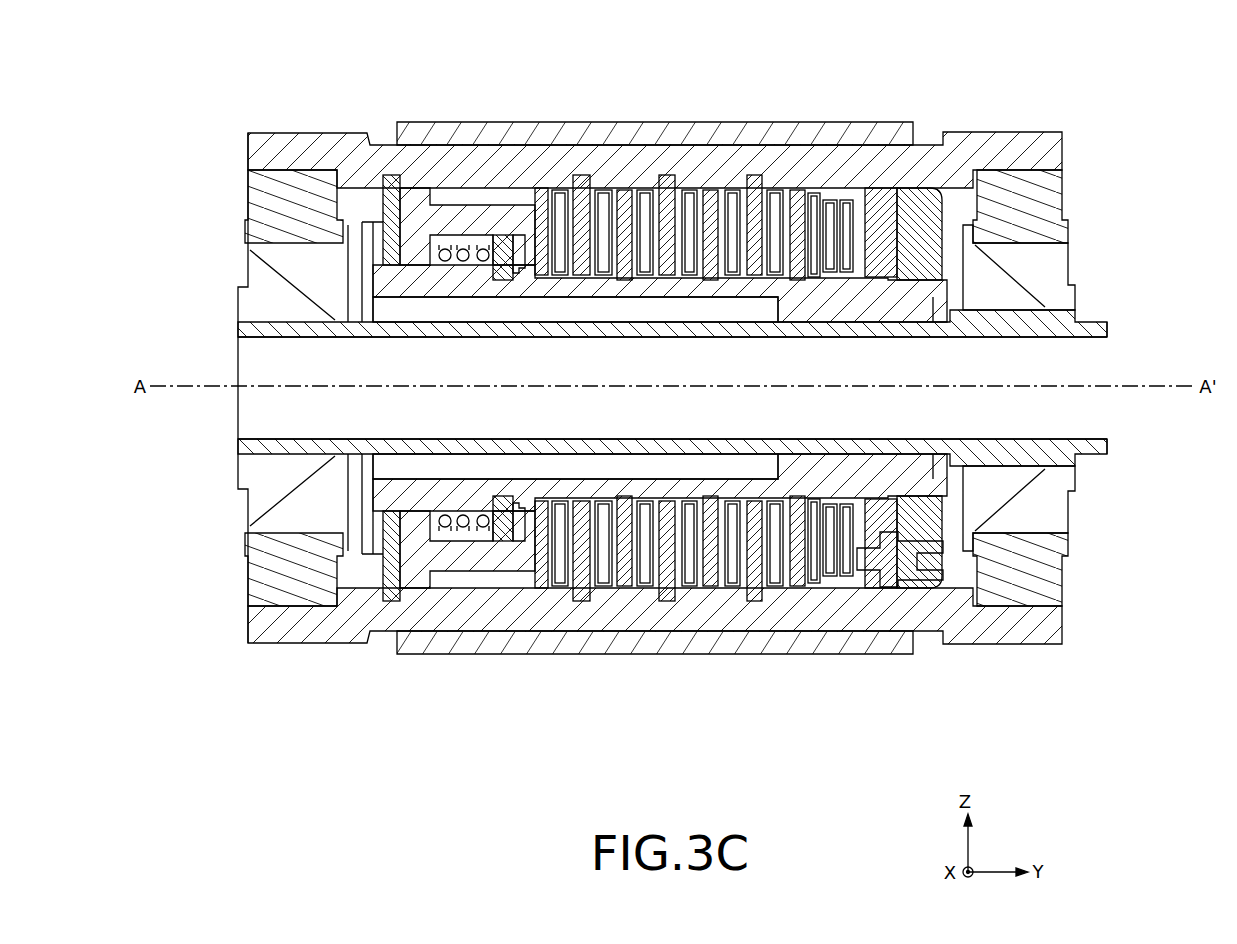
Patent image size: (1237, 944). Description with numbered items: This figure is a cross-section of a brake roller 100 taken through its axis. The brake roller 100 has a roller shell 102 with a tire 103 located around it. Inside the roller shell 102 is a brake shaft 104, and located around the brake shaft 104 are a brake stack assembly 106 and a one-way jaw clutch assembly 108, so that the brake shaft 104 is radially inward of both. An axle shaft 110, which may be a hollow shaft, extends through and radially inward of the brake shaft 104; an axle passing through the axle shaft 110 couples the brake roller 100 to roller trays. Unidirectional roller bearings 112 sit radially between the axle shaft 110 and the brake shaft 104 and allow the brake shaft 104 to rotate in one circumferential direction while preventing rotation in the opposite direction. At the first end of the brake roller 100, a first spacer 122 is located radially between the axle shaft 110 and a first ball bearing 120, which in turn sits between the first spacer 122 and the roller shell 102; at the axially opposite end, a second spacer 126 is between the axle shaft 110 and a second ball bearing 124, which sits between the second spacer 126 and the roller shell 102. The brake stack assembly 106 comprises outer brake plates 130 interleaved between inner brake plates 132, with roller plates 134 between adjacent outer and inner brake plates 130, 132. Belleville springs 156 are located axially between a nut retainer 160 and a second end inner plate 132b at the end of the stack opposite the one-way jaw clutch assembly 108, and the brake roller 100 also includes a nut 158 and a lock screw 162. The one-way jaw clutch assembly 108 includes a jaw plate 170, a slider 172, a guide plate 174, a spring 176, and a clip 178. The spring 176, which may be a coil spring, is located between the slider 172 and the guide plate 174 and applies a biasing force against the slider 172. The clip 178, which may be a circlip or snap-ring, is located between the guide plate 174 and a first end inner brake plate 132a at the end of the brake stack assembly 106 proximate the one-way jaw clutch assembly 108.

The brake roller 100 is at (157, 97).
The roller shell 102 is at (984, 143).
The tire 103 is at (487, 125).
The brake shaft 104 is at (375, 288).
The brake stack assembly 106 is at (812, 88).
The one-way jaw clutch assembly 108 is at (383, 88).
The axle shaft 110 is at (248, 330).
The unidirectional roller bearings 112 is at (838, 318).
The first ball bearing 120 is at (265, 210).
The first spacer 122 is at (262, 487).
The second ball bearing 124 is at (1045, 579).
The second spacer 126 is at (1050, 274).
The outer brake plates 130 is at (583, 515).
The inner brake plates 132 is at (603, 570).
The first end inner brake plate 132a is at (540, 510).
The second end inner plate 132b is at (797, 570).
The roller plates 134 is at (650, 517).
The Belleville springs 156 is at (831, 205).
The nut 158 is at (918, 232).
The nut retainer 160 is at (877, 218).
The lock screw 162 is at (880, 552).
The jaw plate 170 is at (393, 580).
The slider 172 is at (438, 560).
The guide plate 174 is at (505, 505).
The spring 176 is at (463, 512).
The clip 178 is at (517, 545).